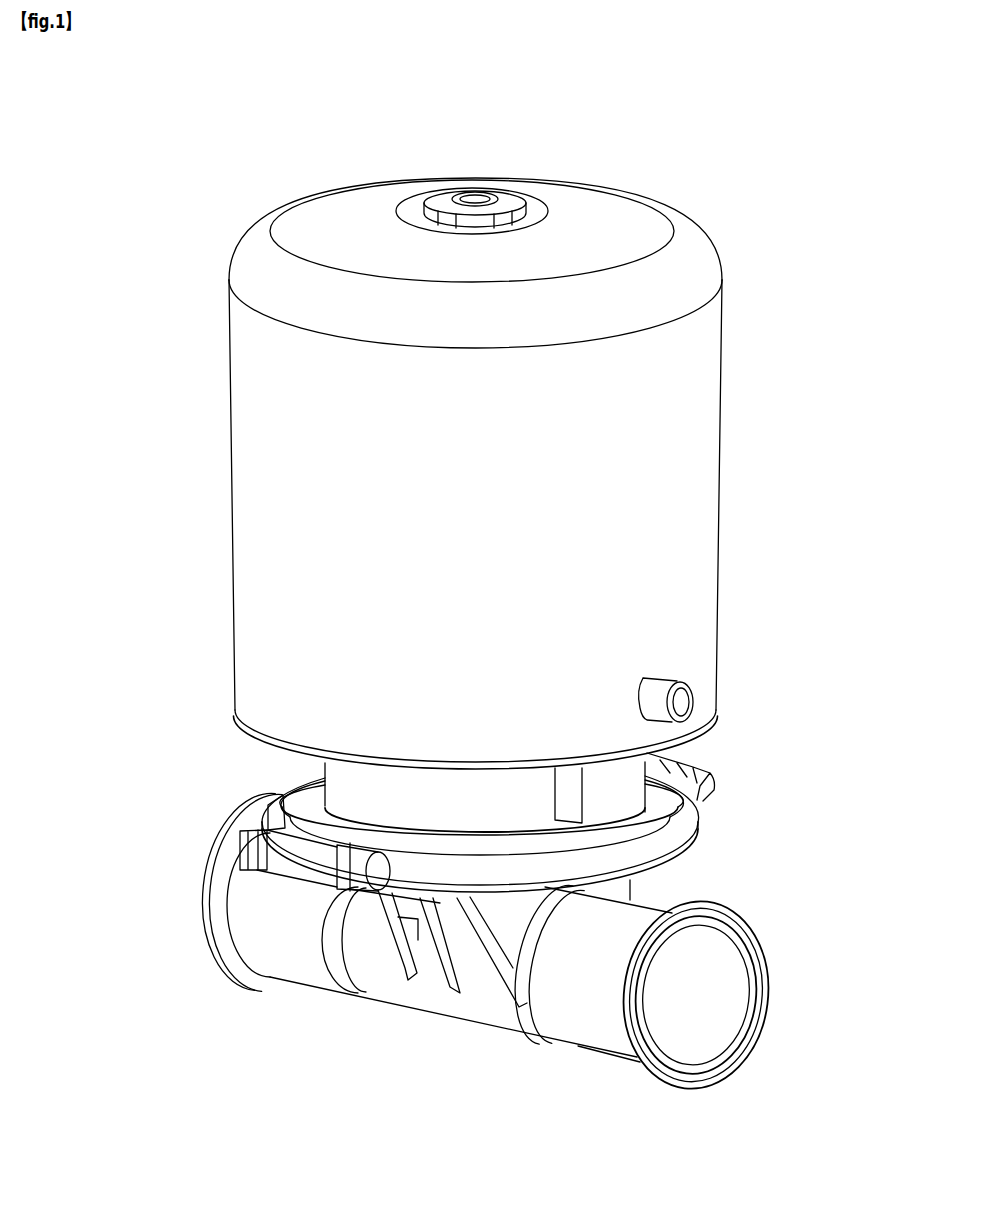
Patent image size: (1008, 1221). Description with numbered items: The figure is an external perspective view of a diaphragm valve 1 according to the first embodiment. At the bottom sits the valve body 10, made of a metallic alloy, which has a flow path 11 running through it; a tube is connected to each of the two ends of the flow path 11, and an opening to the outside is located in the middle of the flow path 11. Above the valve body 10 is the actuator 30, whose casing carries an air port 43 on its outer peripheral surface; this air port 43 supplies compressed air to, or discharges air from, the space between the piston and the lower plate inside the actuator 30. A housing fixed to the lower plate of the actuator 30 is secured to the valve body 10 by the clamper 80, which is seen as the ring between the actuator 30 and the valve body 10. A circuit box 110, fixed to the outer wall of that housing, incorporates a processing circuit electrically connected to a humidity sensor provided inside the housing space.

The diaphragm valve 1 is at (693, 148).
The actuator 30 is at (738, 489).
The air port 43 is at (687, 682).
The circuit box 110 is at (622, 780).
The clamper 80 is at (711, 814).
The valve body 10 is at (646, 908).
The flow path 11 is at (727, 972).